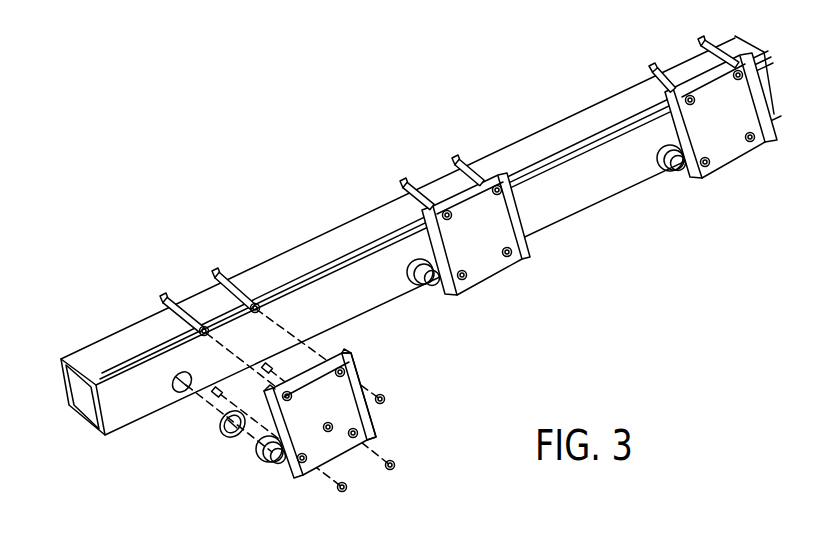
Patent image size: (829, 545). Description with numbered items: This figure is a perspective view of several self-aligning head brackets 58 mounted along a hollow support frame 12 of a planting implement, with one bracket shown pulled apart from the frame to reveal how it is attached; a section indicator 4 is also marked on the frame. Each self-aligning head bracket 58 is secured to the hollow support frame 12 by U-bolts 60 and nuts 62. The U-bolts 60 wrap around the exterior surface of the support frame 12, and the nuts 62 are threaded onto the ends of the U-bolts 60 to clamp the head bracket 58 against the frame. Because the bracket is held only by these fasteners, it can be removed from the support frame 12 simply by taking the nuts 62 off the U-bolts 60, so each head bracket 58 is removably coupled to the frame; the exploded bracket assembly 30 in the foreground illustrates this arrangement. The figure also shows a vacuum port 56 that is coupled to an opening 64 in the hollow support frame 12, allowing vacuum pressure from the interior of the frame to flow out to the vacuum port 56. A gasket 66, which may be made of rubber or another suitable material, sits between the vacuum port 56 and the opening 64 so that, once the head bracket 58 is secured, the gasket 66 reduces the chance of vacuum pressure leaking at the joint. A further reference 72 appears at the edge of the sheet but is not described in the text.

The section line 4- 4 is at (341, 206).
The hollow support frame 12 is at (252, 267).
The mounting bracket assembly 30 is at (378, 436).
The vacuum port 56 is at (265, 460).
The self-aligning head bracket 58 is at (358, 363).
The U-bolt 60 is at (215, 277).
The nut 62 is at (350, 492).
The opening 64 is at (176, 389).
The gasket 66 is at (222, 436).
The element 72 is at (520, 539).